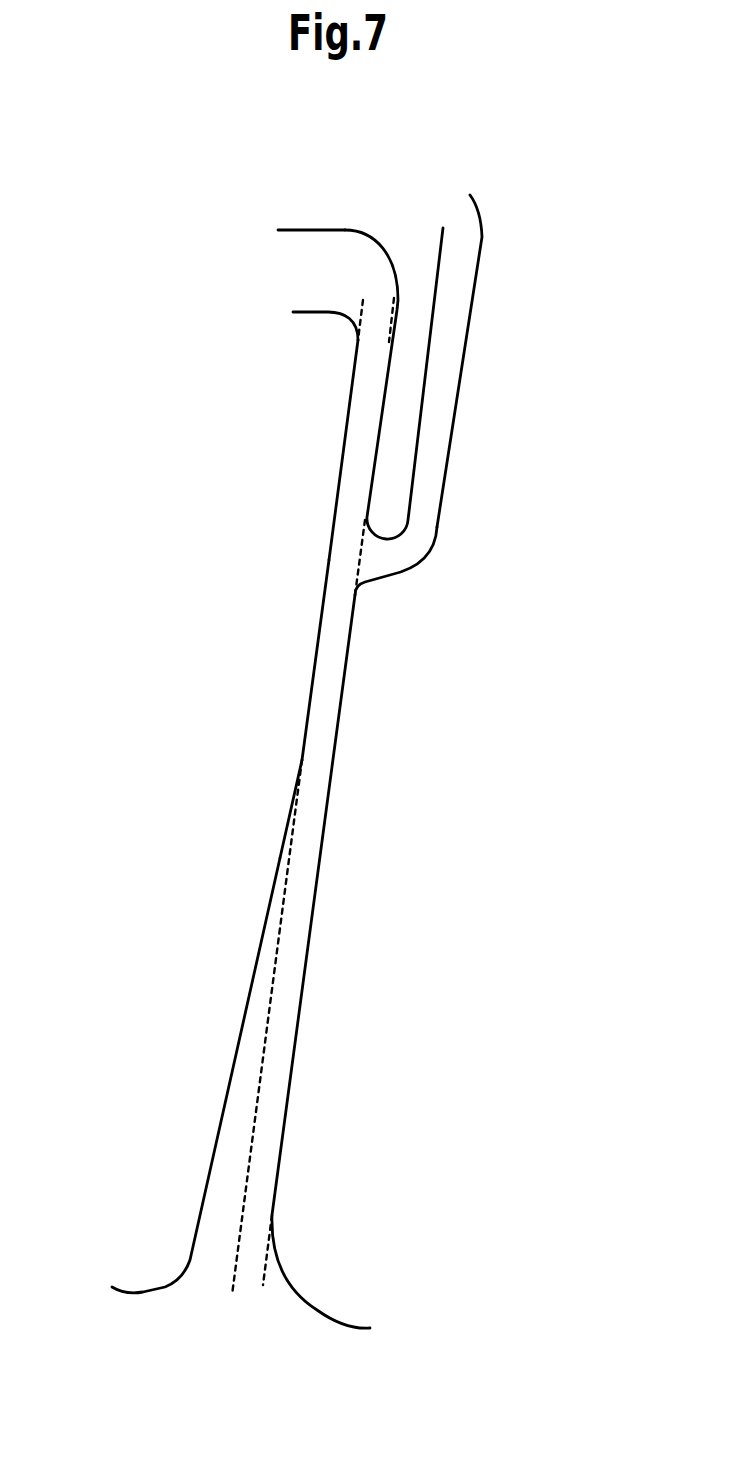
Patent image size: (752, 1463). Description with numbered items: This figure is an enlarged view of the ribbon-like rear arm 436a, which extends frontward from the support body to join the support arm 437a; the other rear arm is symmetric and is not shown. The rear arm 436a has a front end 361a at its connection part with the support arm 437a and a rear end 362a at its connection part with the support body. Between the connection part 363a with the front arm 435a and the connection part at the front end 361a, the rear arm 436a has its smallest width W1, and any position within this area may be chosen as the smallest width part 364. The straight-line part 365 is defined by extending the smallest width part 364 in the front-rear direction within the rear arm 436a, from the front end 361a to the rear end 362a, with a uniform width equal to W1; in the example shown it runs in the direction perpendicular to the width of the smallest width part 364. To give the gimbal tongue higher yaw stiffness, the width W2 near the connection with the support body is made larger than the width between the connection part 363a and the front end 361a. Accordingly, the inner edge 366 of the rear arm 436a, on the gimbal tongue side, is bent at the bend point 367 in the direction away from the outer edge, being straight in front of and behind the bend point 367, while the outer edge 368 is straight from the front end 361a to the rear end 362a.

The support arm 437a is at (295, 232).
The front end 361a is at (378, 240).
The front arm 435a is at (462, 370).
The connection part 363a is at (362, 590).
The rear arm 436a is at (301, 834).
The smallest width part 364 is at (370, 424).
The inner edge 366 is at (325, 597).
The bend point 367 is at (300, 758).
The straight-line part 365 is at (270, 987).
The rear end 362a is at (190, 1260).
The outer edge 368 is at (313, 913).
The width W1 is at (415, 428).
The width W2 is at (272, 1210).